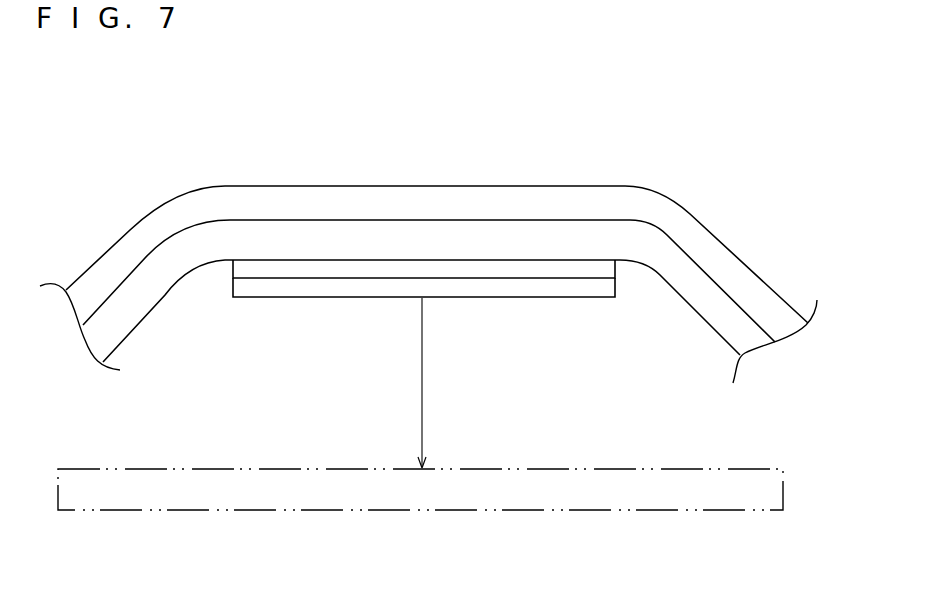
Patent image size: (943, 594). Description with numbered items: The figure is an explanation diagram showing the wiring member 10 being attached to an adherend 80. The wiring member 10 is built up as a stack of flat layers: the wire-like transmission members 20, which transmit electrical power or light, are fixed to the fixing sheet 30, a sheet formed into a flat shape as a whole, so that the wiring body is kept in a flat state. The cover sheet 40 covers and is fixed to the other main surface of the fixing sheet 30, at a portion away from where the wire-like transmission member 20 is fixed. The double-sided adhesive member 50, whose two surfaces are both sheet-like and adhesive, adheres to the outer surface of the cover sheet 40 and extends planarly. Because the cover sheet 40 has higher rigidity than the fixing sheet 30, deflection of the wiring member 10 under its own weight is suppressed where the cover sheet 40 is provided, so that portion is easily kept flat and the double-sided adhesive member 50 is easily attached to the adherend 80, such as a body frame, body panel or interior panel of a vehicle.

The wiring member 10 is at (428, 213).
The wire-like transmission member 20 is at (344, 111).
The fixing sheet 30 is at (534, 235).
The cover sheet 40 is at (475, 270).
The double-sided adhesive member 50 is at (535, 288).
The adherend 80 is at (515, 511).